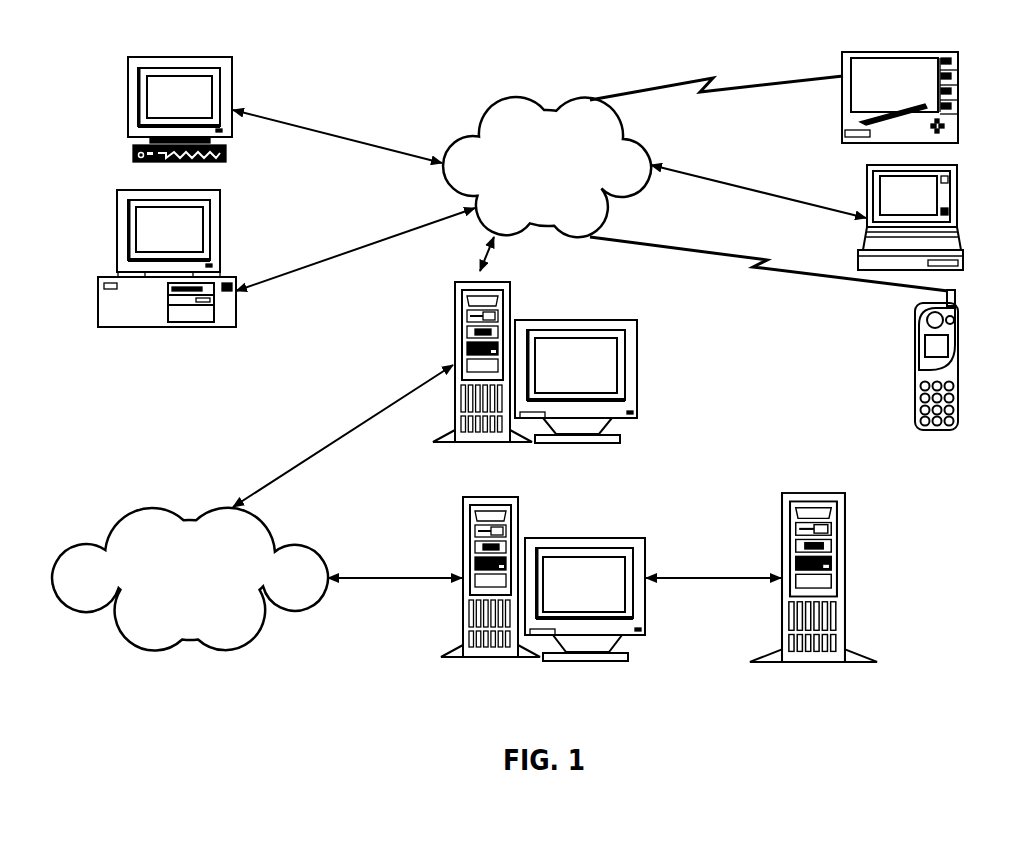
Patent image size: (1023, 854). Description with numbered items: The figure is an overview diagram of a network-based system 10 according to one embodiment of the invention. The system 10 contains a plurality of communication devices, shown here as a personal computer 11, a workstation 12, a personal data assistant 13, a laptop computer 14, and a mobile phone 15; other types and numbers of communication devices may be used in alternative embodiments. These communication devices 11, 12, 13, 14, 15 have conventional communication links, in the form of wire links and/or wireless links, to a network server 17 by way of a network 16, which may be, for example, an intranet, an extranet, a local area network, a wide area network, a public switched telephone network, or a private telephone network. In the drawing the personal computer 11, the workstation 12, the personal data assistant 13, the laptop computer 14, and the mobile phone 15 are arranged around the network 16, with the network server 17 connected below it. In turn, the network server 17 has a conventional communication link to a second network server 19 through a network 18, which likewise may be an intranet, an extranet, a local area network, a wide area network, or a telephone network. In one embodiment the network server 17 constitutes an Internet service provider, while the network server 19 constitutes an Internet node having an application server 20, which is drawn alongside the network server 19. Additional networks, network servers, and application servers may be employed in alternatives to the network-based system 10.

The network-based system 10 is at (575, 704).
The personal computer 11 is at (127, 108).
The workstation 12 is at (116, 243).
The personal data assistant 13 is at (960, 102).
The laptop computer 14 is at (958, 218).
The mobile phone 15 is at (960, 370).
The network 16 is at (563, 197).
The network server 17 is at (637, 358).
The network 18 is at (208, 611).
The network server 19 is at (580, 538).
The application server 20 is at (847, 578).